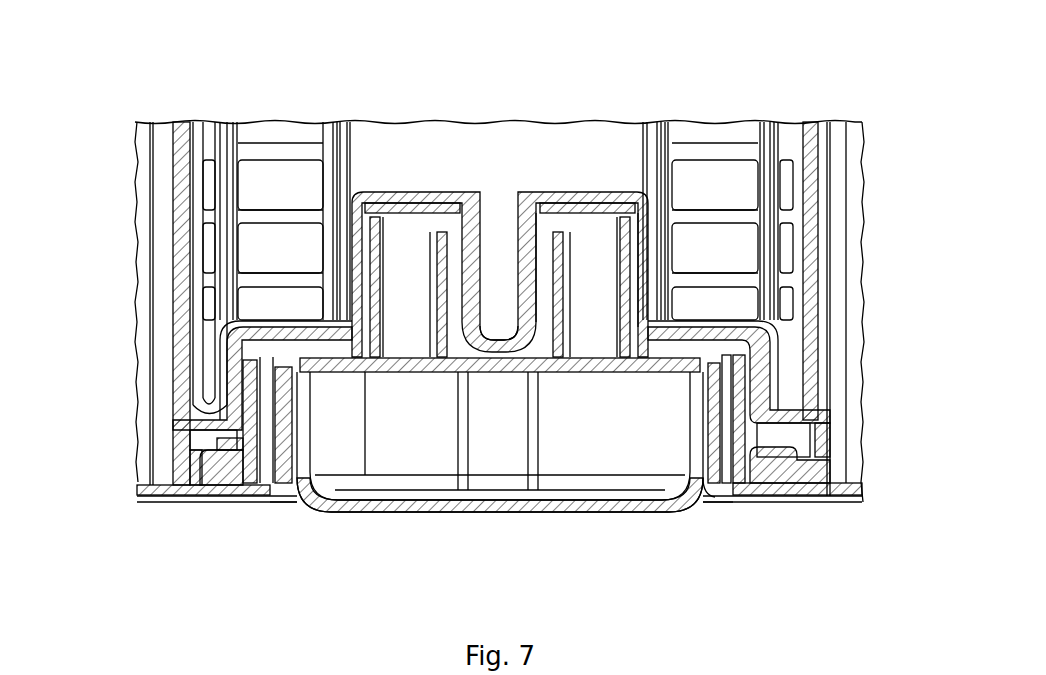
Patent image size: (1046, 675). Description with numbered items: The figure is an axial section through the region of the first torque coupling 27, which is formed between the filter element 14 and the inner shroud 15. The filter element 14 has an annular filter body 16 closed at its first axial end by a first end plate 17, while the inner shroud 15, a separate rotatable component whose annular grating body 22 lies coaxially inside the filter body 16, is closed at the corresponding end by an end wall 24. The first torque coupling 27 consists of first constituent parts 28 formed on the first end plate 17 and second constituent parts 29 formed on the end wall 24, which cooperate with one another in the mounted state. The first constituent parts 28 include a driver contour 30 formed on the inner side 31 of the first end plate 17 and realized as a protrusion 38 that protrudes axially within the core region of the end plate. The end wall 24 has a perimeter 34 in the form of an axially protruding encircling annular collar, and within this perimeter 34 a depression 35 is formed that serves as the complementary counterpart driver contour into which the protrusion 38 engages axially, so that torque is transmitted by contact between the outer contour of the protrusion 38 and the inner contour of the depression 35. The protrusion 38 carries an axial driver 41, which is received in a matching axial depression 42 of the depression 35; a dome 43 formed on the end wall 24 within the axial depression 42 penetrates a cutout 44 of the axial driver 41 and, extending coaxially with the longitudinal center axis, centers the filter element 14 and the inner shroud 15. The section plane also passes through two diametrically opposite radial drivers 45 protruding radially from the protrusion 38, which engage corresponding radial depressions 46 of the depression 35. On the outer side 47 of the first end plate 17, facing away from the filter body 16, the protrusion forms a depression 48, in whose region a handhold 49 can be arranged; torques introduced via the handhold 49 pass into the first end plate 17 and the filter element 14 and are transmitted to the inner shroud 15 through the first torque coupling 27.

The filter element 14 is at (172, 506).
The inner shroud 15 is at (658, 338).
The filter body 16 is at (140, 296).
The first end plate 17 is at (808, 495).
The grating body 22 is at (698, 150).
The end wall 24 is at (290, 340).
The first torque coupling 27 is at (705, 299).
The first constituent parts 28 is at (699, 357).
The second constituent parts 29 is at (652, 242).
The driver contour 30 is at (330, 367).
The inner side 31 is at (783, 466).
The perimeter 34 is at (820, 438).
The depression 35 is at (690, 345).
The protrusion 38 is at (400, 368).
The axial driver 41 is at (387, 307).
The axial depression 42 is at (633, 290).
The dome 43 is at (522, 332).
The cutout 44 is at (537, 265).
The radial drivers 45 is at (270, 420).
The radial depressions 46 is at (263, 500).
The outer side 47 is at (210, 500).
The depression 48 is at (501, 588).
The handhold 49 is at (453, 508).